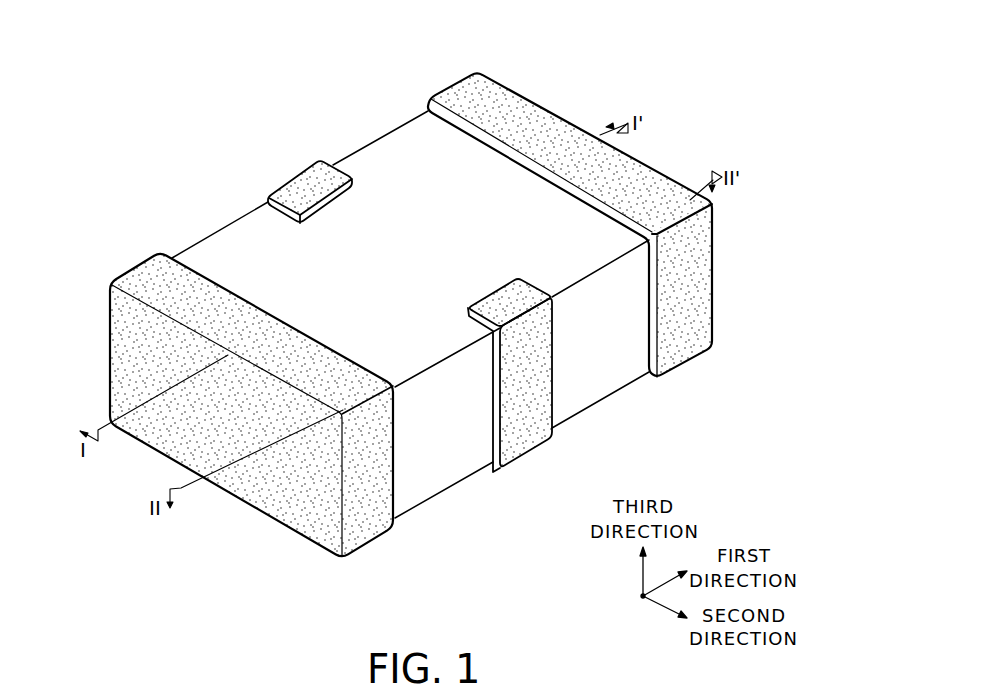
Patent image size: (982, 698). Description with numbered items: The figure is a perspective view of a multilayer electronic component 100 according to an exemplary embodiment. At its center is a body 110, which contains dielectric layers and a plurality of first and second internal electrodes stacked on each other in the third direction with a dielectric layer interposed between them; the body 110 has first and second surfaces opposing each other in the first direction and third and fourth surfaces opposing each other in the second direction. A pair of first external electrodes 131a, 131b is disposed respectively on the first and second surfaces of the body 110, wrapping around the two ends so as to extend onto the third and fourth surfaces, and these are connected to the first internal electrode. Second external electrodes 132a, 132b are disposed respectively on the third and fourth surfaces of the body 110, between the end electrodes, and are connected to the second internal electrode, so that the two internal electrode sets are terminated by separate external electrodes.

The multilayer electronic component 100 is at (227, 17).
The body 110 is at (228, 248).
The first external electrode 131a is at (145, 268).
The first external electrode 131b is at (462, 87).
The second external electrode 132a is at (297, 181).
The second external electrode 132b is at (522, 298).